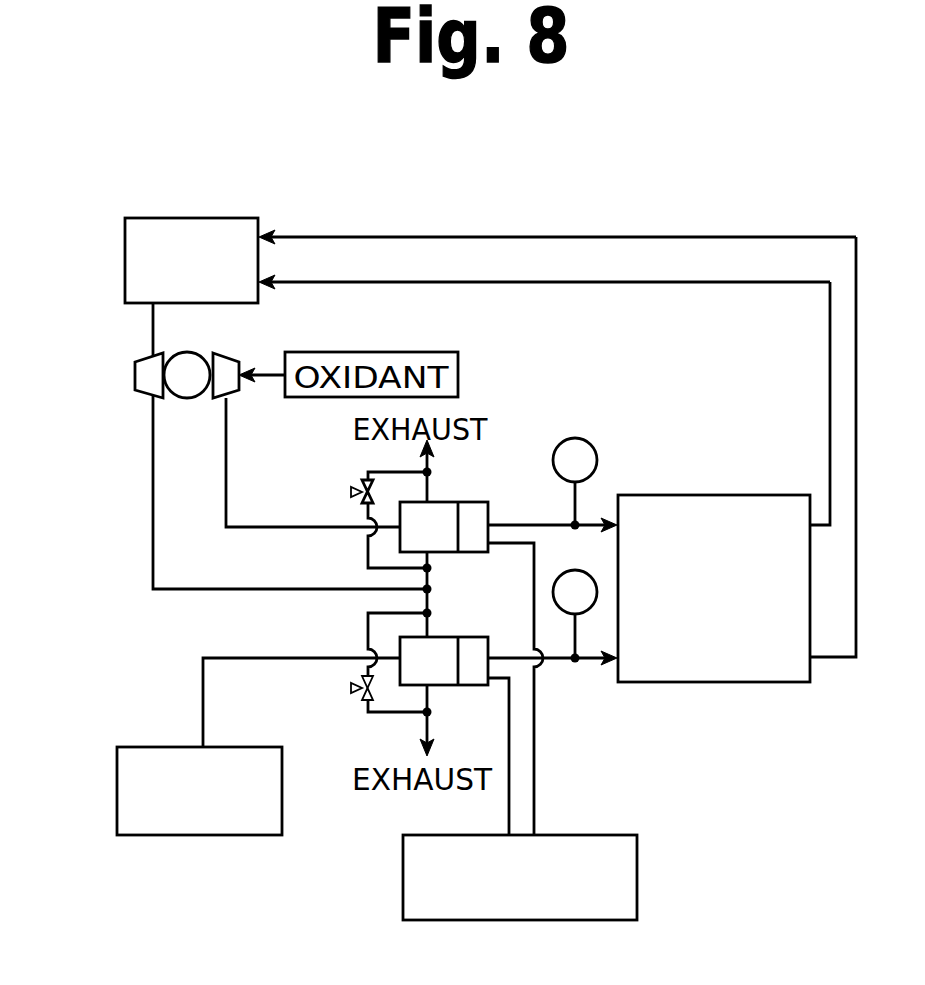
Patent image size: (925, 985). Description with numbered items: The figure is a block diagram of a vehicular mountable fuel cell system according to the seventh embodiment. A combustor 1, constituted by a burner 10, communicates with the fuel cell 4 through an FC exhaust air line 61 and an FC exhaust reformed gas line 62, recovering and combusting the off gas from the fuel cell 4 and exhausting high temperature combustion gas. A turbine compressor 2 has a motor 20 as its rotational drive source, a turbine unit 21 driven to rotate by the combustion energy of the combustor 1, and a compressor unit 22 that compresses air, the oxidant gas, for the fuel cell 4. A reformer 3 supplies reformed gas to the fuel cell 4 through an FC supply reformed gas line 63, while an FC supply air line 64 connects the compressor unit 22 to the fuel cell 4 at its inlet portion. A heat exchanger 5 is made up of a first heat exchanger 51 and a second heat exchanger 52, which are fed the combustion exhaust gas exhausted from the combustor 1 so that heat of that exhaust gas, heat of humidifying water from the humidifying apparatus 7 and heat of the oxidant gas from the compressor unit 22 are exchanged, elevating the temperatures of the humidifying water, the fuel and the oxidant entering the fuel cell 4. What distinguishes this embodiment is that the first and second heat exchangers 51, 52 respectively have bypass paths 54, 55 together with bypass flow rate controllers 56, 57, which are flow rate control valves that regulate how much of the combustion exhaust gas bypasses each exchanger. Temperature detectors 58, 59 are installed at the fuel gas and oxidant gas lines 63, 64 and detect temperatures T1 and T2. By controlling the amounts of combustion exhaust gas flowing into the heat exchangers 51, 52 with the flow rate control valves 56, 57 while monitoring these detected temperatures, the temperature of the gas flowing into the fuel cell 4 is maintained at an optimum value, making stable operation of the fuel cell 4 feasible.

The combustor 1 is at (218, 212).
The burner 10 is at (125, 258).
The turbine compressor 2 is at (186, 386).
The motor 20 is at (188, 398).
The turbine unit 21 is at (135, 378).
The compressor unit 22 is at (232, 364).
The reformer 3 is at (150, 728).
The fuel cell 4 is at (745, 495).
The heat exchanger 5 is at (424, 518).
The first heat exchanger 51 is at (471, 481).
The second heat exchanger 52 is at (456, 623).
The bypass path 54 is at (368, 553).
The bypass path 55 is at (368, 625).
The bypass flow rate controller 56 is at (351, 492).
The bypass flow rate controller 57 is at (351, 688).
The temperature detector 58 is at (589, 443).
The temperature detector 59 is at (588, 573).
The FC exhaust air line 61 is at (830, 358).
The FC exhaust reformed gas line 62 is at (762, 236).
The FC supply reformed gas line 63 is at (557, 662).
The FC supply air line 64 is at (549, 523).
The humidifying apparatus 7 is at (580, 780).